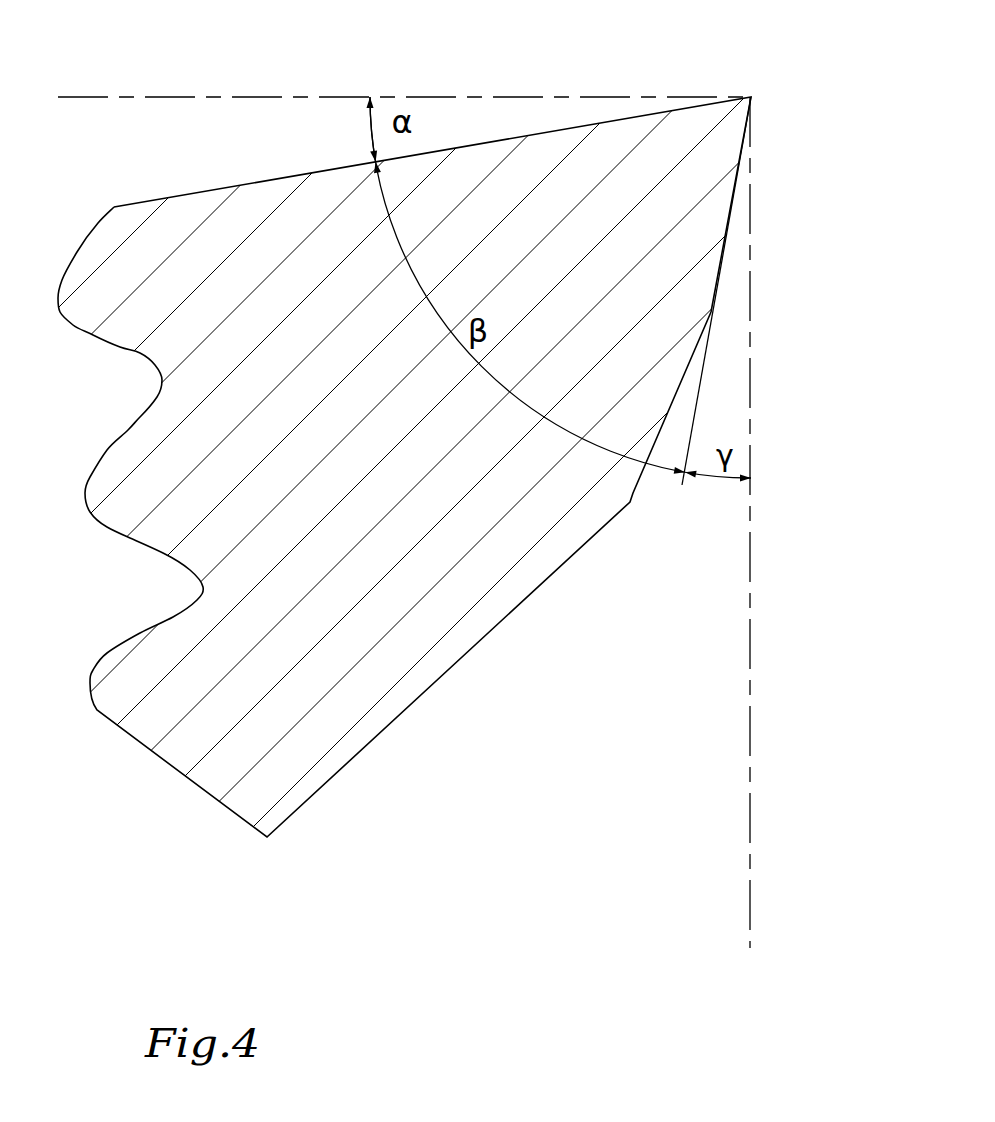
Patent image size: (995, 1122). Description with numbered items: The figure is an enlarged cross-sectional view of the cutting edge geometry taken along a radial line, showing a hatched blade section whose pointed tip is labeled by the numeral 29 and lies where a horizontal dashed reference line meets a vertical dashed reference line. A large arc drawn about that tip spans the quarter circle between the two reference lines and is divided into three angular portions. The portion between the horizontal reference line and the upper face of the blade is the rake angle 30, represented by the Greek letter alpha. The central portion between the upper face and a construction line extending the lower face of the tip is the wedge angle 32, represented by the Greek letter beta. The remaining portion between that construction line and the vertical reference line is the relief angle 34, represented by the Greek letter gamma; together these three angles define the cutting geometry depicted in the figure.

The cutting edge tip 29 is at (752, 97).
The rake angle 30 is at (369, 126).
The wedge angle 32 is at (501, 388).
The relief angle 34 is at (717, 482).